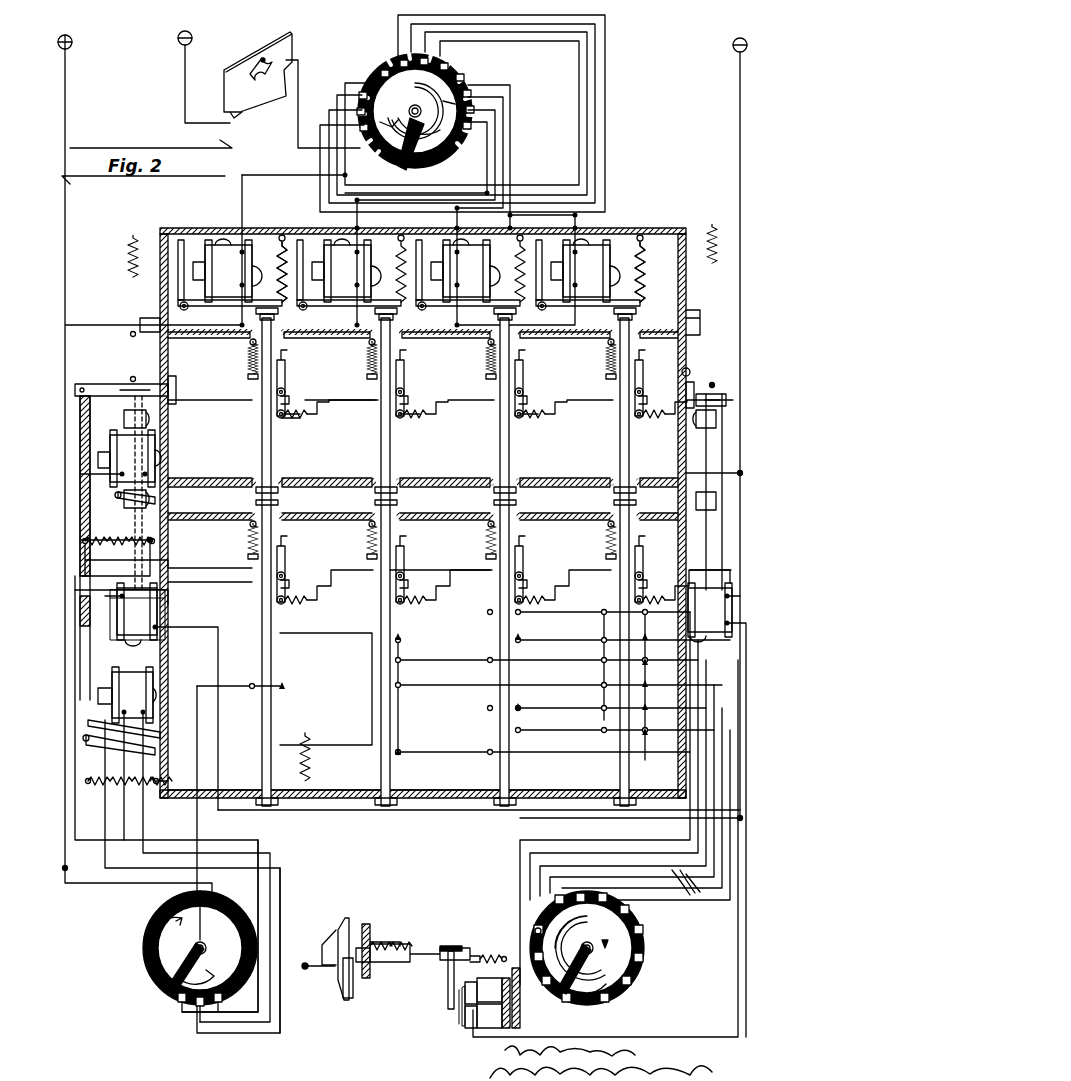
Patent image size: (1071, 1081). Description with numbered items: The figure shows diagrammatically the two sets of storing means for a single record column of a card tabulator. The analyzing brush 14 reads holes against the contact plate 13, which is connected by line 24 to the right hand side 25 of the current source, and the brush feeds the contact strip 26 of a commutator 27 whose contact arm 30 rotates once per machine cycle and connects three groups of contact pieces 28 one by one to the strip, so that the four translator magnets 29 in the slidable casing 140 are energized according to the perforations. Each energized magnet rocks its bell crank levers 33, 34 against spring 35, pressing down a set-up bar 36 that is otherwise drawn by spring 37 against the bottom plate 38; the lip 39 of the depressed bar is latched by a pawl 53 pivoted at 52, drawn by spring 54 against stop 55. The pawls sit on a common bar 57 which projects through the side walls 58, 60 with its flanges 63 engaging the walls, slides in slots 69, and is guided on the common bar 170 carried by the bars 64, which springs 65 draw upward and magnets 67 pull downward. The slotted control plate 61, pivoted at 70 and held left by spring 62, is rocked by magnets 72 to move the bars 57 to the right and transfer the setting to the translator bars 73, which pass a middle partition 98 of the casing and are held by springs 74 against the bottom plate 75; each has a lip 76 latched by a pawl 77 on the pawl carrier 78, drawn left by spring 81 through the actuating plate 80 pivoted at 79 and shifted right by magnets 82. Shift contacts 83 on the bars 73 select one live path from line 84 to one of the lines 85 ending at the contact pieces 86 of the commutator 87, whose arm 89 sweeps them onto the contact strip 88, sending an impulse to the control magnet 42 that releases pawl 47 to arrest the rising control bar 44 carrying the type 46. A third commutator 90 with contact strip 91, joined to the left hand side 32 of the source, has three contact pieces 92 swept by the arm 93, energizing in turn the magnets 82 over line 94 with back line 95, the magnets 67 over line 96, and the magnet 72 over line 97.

The contact plate 13 is at (238, 66).
The analyzing brush 14 is at (260, 88).
The line 24 is at (190, 80).
The current source right hand side 25 is at (732, 128).
The contact strip 26 is at (390, 72).
The commutator 27 is at (445, 148).
The contact pieces 28 is at (445, 62).
The translator magnets 29 is at (226, 248).
The contact arm 30 is at (398, 162).
The current source left hand side 32 is at (66, 80).
The bell crank lever 33 is at (305, 245).
The bell crank lever 34 is at (348, 333).
The spring 35 is at (642, 262).
The set-up bars 36 is at (262, 446).
The spring 37 is at (250, 360).
The bottom plate 38 is at (436, 478).
The lip 39 is at (392, 372).
The control magnet 42 is at (476, 1012).
The control bar 44 is at (348, 928).
The type 46 is at (350, 996).
The pawl 47 is at (372, 962).
The pivot 52 is at (404, 394).
The pawls 53 is at (284, 372).
The spring 54 is at (298, 604).
The stop 55 is at (408, 414).
The common bar 57 is at (342, 396).
The side wall 58 is at (166, 434).
The side wall 60 is at (682, 372).
The control plate 61 is at (122, 406).
The spring 62 is at (128, 556).
The flanges 63 is at (176, 376).
The bars 64 is at (160, 526).
The springs 65 is at (128, 360).
The magnets 67 is at (425, 803).
The slots 69 is at (170, 406).
The pivot 70 is at (118, 492).
The magnets 72 is at (129, 458).
The translator bars 73 is at (260, 606).
The springs 74 is at (366, 540).
The bottom plate 75 is at (318, 792).
The lip 76 is at (272, 552).
The pawls 77 is at (284, 560).
The pawl carrier 78 is at (440, 574).
The pivot 79 is at (94, 735).
The actuating plate 80 is at (116, 628).
The spring 81 is at (129, 793).
The magnets 82 is at (184, 844).
The shift contacts 83 is at (252, 682).
The line 84 is at (197, 682).
The lines 85 is at (690, 855).
The contact pieces 86 is at (540, 932).
The commutator 87 is at (606, 984).
The contact strip 88 is at (648, 940).
The contact arm 89 is at (564, 992).
The commutator 90 is at (145, 940).
The contact strip 91 is at (210, 972).
The contact pieces 92 is at (182, 1005).
The contact arm 93 is at (160, 996).
The line 94 is at (256, 868).
The common back line 95 is at (364, 815).
The line 96 is at (276, 868).
The line 97 is at (125, 514).
The middle shelf 98 is at (340, 478).
The casing 140 is at (640, 232).
The common bar 170 is at (130, 384).